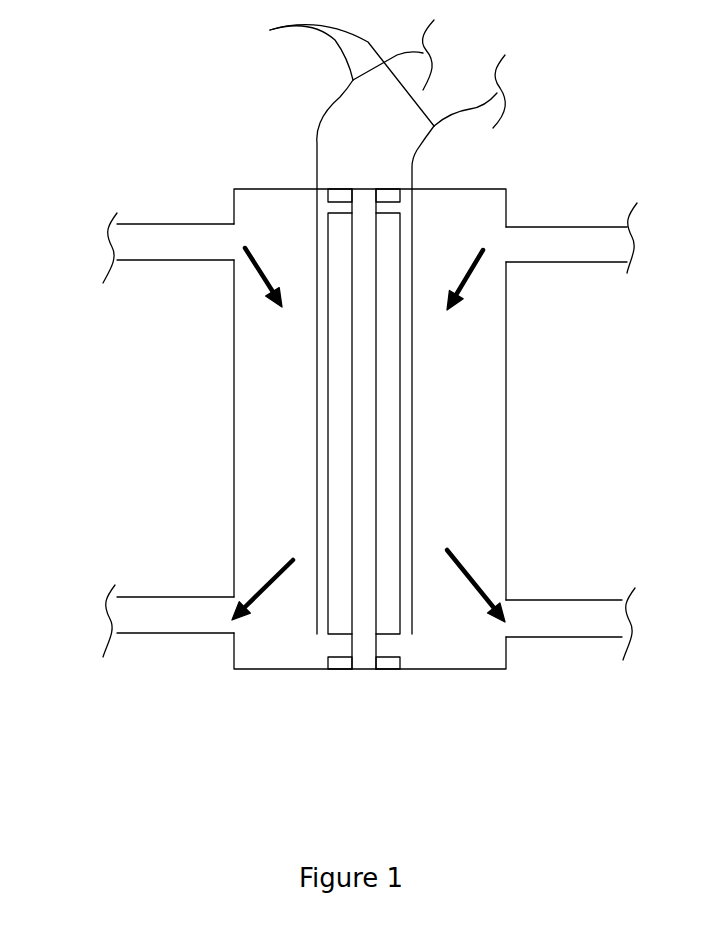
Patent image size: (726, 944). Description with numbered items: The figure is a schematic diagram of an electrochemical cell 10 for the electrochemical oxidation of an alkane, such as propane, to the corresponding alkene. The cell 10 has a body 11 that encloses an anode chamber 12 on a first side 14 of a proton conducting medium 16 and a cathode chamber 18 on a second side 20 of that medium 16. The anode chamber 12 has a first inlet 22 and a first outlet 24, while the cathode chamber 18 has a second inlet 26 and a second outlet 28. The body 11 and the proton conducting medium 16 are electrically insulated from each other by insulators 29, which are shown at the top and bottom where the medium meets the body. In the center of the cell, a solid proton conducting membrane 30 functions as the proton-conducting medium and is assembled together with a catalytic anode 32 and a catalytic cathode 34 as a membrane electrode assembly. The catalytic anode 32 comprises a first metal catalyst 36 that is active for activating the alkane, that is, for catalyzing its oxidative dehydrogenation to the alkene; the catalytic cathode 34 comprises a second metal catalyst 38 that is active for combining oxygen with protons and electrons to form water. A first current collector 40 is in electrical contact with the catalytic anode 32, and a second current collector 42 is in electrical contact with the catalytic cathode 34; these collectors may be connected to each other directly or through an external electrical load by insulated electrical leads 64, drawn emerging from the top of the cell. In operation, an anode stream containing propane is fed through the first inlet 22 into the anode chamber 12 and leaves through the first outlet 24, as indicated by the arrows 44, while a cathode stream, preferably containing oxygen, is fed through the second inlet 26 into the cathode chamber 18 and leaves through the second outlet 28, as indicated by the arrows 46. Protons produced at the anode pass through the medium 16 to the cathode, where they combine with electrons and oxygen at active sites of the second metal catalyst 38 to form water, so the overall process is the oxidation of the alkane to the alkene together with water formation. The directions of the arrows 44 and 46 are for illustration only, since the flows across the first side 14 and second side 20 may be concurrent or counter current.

The electrochemical cell 10 is at (124, 130).
The body 11 is at (495, 189).
The anode chamber 12 is at (270, 393).
The first side 14 is at (330, 345).
The proton conducting medium 16 is at (280, 322).
The cathode chamber 18 is at (483, 320).
The second side 20 is at (400, 345).
The first inlet 22 is at (163, 223).
The first outlet 24 is at (175, 634).
The second inlet 26 is at (567, 227).
The second outlet 28 is at (575, 638).
The insulators 29 is at (392, 189).
The solid proton conducting membrane 30 is at (352, 457).
The catalytic anode 32 is at (338, 508).
The catalytic cathode 34 is at (388, 432).
The first metal catalyst 36 is at (338, 537).
The second metal catalyst 38 is at (388, 473).
The first current collector 40 is at (317, 430).
The second current collector 42 is at (412, 393).
The arrows 44 is at (267, 267).
The arrows 46 is at (467, 260).
The electrical leads 64 is at (372, 73).